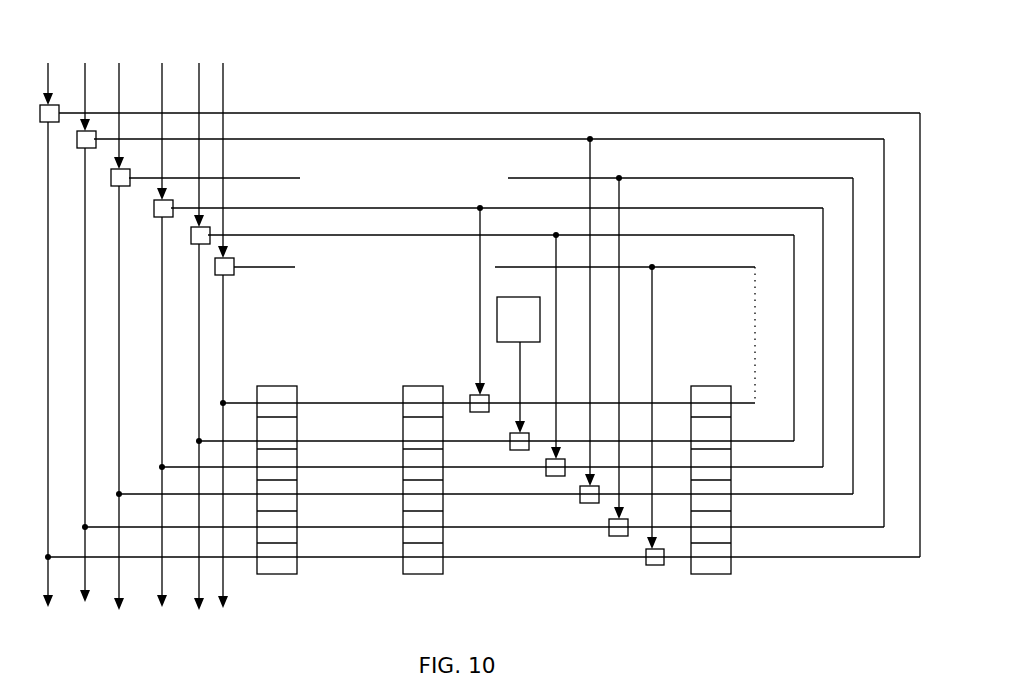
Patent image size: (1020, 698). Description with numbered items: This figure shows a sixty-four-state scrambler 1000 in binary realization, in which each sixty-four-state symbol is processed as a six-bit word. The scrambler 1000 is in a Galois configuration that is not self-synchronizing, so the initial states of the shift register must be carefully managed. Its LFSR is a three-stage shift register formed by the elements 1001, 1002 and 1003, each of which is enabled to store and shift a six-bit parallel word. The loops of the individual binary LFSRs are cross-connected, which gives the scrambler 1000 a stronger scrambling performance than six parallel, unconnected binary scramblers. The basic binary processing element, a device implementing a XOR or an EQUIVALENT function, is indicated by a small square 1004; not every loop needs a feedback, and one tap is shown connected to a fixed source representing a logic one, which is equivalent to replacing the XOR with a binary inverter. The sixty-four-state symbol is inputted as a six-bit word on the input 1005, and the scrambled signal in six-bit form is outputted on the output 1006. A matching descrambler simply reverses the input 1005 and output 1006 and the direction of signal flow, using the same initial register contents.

The 64-state scrambler 1000 is at (486, 313).
The shift register element 1001 is at (292, 500).
The shift register element 1002 is at (424, 504).
The shift register element 1003 is at (715, 503).
The small square 1004 is at (648, 565).
The input 1005 is at (228, 55).
The output 1006 is at (242, 614).